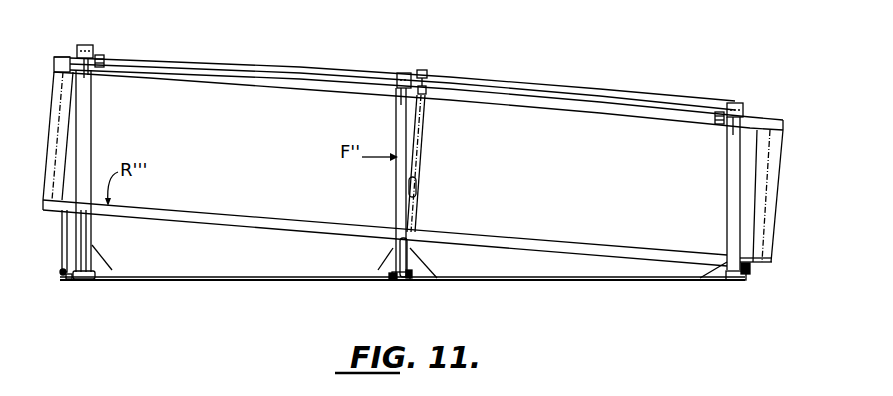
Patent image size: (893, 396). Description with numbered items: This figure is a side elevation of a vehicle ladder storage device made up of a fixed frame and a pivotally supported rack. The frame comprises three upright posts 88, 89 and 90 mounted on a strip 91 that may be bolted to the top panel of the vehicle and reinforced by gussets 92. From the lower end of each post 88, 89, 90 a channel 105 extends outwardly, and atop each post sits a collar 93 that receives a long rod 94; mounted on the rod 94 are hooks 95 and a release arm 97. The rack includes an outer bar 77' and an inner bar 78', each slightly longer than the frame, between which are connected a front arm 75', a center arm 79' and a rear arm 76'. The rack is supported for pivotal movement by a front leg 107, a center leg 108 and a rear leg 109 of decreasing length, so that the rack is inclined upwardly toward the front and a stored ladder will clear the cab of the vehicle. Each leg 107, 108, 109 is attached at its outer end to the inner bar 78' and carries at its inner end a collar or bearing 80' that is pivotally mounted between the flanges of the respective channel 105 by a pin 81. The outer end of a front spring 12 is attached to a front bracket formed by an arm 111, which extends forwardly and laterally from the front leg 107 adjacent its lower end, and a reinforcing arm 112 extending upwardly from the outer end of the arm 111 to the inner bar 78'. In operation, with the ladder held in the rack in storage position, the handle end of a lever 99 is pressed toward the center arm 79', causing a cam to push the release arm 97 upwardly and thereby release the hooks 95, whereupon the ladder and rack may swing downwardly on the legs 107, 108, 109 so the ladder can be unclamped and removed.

The front spring 12 is at (60, 272).
The front arm 75' is at (45, 136).
The rear arm 76' is at (770, 196).
The outer bar 77' is at (418, 101).
The inner bar 78' is at (385, 233).
The center arm 79' is at (436, 163).
The collar or bearing 80' is at (413, 296).
The pin 81 is at (394, 280).
The post 88 is at (86, 117).
The post 89 is at (398, 134).
The post 90 is at (727, 180).
The strip 91 is at (558, 281).
The gusset 92 is at (96, 264).
The collar 93 is at (84, 45).
The rod 94 is at (244, 64).
The hook 95 is at (100, 55).
The release arm 97 is at (423, 70).
The lever 99 is at (416, 180).
The channel 105 is at (94, 272).
The front leg 107 is at (84, 233).
The center leg 108 is at (399, 252).
The rear leg 109 is at (746, 273).
The arm 111 is at (68, 280).
The reinforcing arm 112 is at (61, 229).